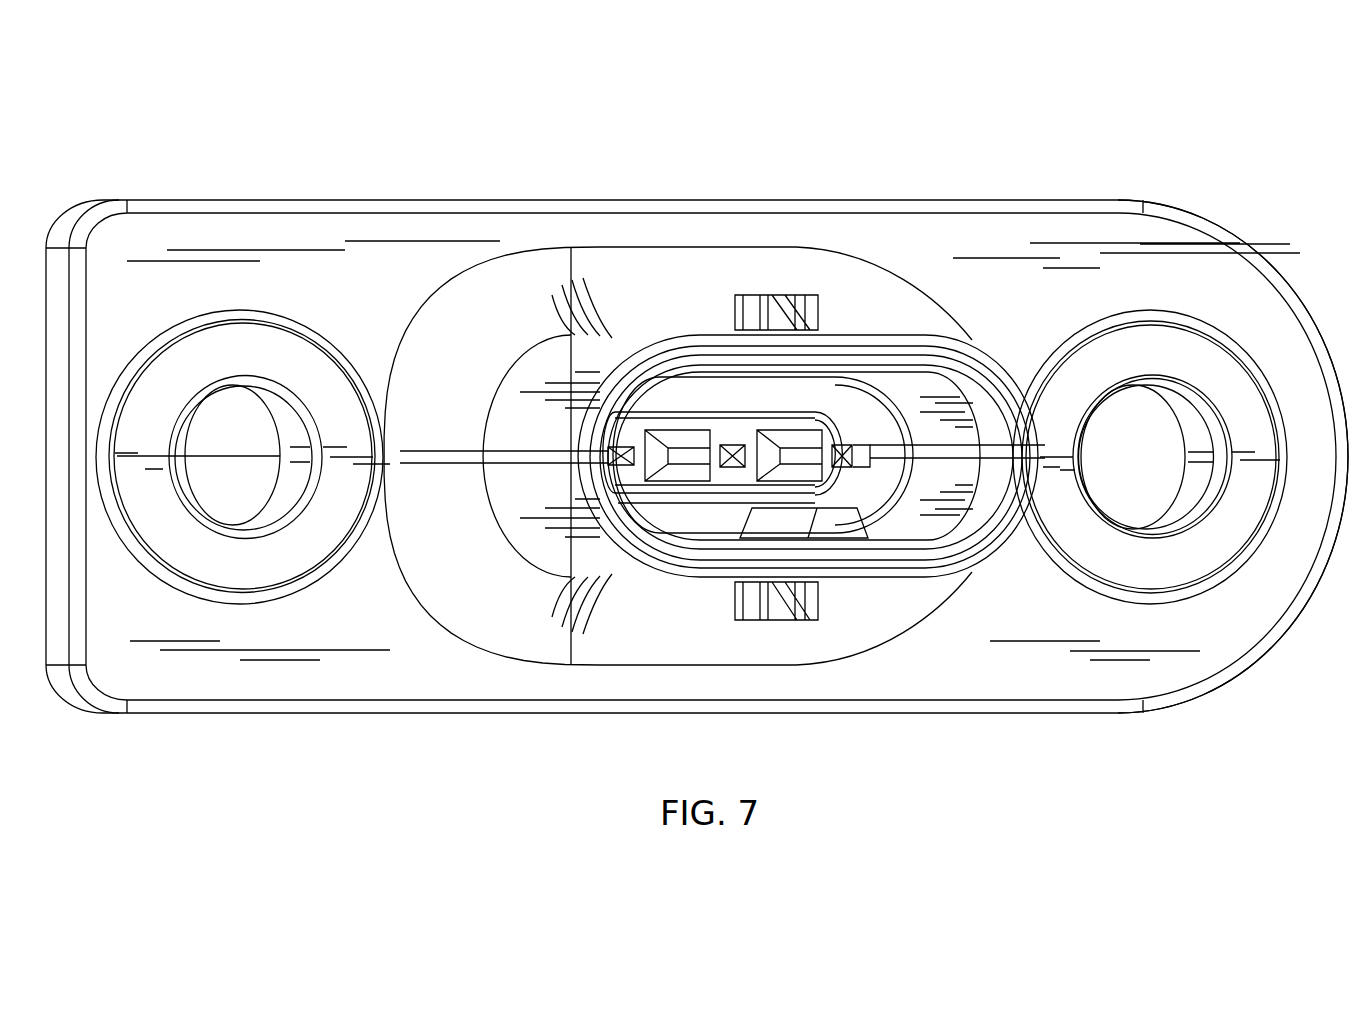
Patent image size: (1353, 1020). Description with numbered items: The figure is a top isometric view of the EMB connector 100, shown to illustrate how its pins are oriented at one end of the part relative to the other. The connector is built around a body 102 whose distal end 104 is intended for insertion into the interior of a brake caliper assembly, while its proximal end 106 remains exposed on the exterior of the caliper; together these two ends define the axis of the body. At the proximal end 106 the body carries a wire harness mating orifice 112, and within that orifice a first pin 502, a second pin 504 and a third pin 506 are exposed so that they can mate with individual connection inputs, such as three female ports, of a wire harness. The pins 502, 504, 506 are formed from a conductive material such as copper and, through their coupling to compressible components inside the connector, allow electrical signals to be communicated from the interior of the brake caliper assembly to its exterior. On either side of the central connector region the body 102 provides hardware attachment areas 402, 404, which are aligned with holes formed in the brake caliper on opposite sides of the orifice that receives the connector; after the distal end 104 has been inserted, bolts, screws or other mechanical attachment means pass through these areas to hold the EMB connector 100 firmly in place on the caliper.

The EMB connector 100 is at (340, 104).
The body 102 is at (63, 233).
The distal end 104 is at (206, 428).
The proximal end 106 is at (1200, 205).
The wire harness mating orifice 112 is at (848, 400).
The hardware attachment area 402 is at (291, 438).
The hardware attachment area 404 is at (1172, 428).
The first pin 502 is at (618, 446).
The second pin 504 is at (698, 430).
The third pin 506 is at (808, 430).